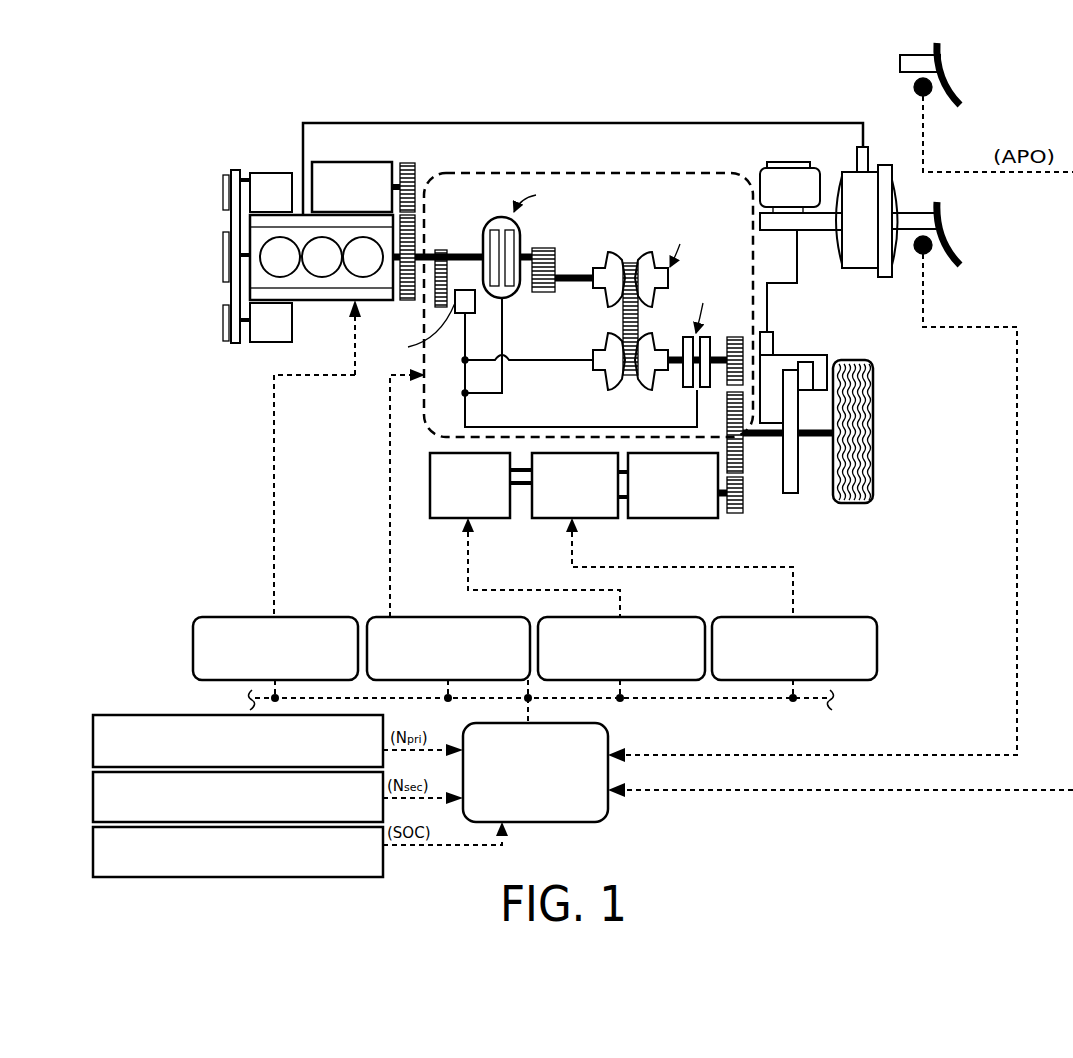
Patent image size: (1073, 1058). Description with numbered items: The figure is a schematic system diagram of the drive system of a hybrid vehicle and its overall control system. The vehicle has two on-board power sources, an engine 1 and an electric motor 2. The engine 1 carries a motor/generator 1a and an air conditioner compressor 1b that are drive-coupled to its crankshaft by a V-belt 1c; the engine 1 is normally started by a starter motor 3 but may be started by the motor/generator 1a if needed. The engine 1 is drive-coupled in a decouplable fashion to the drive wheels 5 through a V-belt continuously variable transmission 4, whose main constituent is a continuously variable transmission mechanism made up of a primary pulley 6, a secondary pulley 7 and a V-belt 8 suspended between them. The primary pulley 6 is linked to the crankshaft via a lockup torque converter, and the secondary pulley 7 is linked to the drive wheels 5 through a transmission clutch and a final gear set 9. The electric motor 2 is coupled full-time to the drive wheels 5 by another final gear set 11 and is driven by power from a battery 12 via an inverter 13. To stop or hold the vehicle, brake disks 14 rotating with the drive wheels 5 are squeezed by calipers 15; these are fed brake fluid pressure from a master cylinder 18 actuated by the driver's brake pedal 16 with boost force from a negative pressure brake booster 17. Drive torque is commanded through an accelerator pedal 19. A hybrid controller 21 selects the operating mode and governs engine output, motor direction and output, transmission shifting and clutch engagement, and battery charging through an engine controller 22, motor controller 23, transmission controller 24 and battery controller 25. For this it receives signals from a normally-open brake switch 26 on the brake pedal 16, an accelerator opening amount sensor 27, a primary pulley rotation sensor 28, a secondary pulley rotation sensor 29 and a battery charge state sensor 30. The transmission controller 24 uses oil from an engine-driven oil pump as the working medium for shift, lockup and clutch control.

The engine 1 is at (321, 304).
The motor/generator 1a is at (265, 343).
The air conditioner compressor 1b is at (262, 172).
The V-belt 1c is at (226, 222).
The electric motor 2 is at (690, 518).
The starter motor 3 is at (354, 162).
The V-belt continuously variable transmission 4 is at (676, 173).
The drive wheels 5 is at (875, 372).
The primary pulley 6 is at (610, 262).
The secondary pulley 7 is at (617, 377).
The V-belt 8 is at (623, 312).
The final gear set 9 is at (725, 423).
The final gear set 11 is at (743, 493).
The battery 12 is at (440, 518).
The inverter 13 is at (548, 518).
The brake disks 14 is at (797, 482).
The calipers 15 is at (816, 353).
The brake pedal 16 is at (963, 252).
The negative pressure brake booster 17 is at (865, 270).
The master cylinder 18 is at (812, 231).
The accelerator pedal 19 is at (957, 80).
The hybrid controller 21 is at (608, 742).
The engine controller 22 is at (337, 617).
The motor controller 23 is at (852, 617).
The transmission controller 24 is at (432, 617).
The battery controller 25 is at (667, 617).
The brake switch 26 is at (928, 254).
The accelerator opening amount sensor 27 is at (928, 96).
The primary pulley rotation sensor 28 is at (93, 745).
The secondary pulley rotation sensor 29 is at (93, 795).
The battery charge state sensor 30 is at (93, 840).